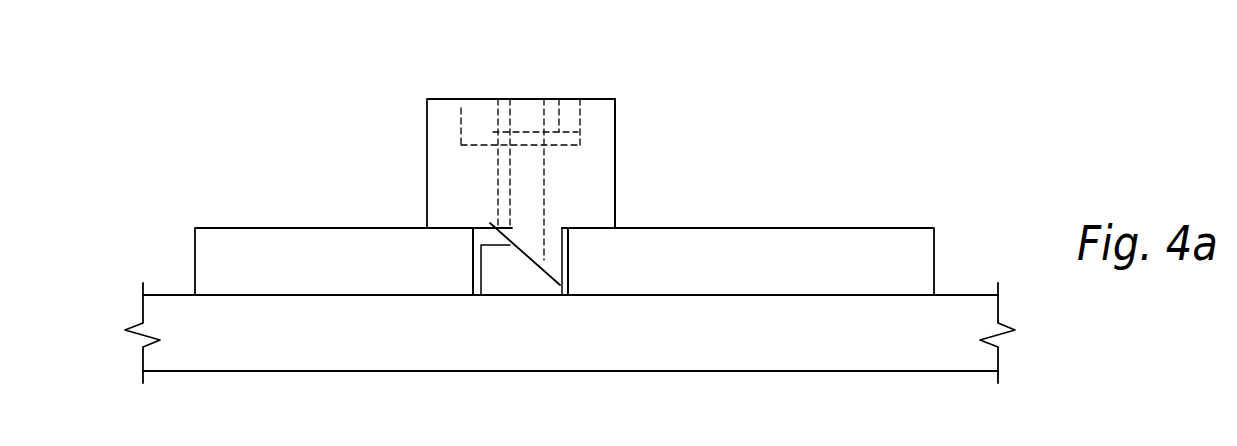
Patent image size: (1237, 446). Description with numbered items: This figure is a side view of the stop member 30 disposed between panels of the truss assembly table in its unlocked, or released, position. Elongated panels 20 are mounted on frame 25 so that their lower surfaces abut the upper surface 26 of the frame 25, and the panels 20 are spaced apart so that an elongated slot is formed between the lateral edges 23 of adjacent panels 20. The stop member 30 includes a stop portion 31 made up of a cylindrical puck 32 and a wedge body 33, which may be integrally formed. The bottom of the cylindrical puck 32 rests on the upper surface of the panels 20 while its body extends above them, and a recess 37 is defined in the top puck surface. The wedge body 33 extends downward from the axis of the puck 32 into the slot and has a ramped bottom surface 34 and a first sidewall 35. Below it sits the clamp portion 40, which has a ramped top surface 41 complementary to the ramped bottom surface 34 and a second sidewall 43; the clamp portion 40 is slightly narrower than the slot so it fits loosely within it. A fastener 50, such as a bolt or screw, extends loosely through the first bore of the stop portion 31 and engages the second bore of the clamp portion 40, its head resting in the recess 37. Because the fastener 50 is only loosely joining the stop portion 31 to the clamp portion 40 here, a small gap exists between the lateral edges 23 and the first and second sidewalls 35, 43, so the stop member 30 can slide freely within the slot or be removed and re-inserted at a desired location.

The panel 20 is at (240, 232).
The lateral edge 23 is at (470, 243).
The frame 25 is at (172, 303).
The upper surface of frame 26 is at (960, 296).
The stop member 30 is at (603, 78).
The stop portion 31 is at (615, 130).
The cylindrical puck 32 is at (608, 115).
The wedge body 33 is at (547, 258).
The ramped bottom surface 34 is at (549, 262).
The first sidewall 35 is at (568, 232).
The recess 37 is at (461, 108).
The clamp portion 40 is at (480, 268).
The ramped top surface 41 is at (530, 262).
The second sidewall 43 is at (489, 265).
The fastener 50 is at (490, 223).